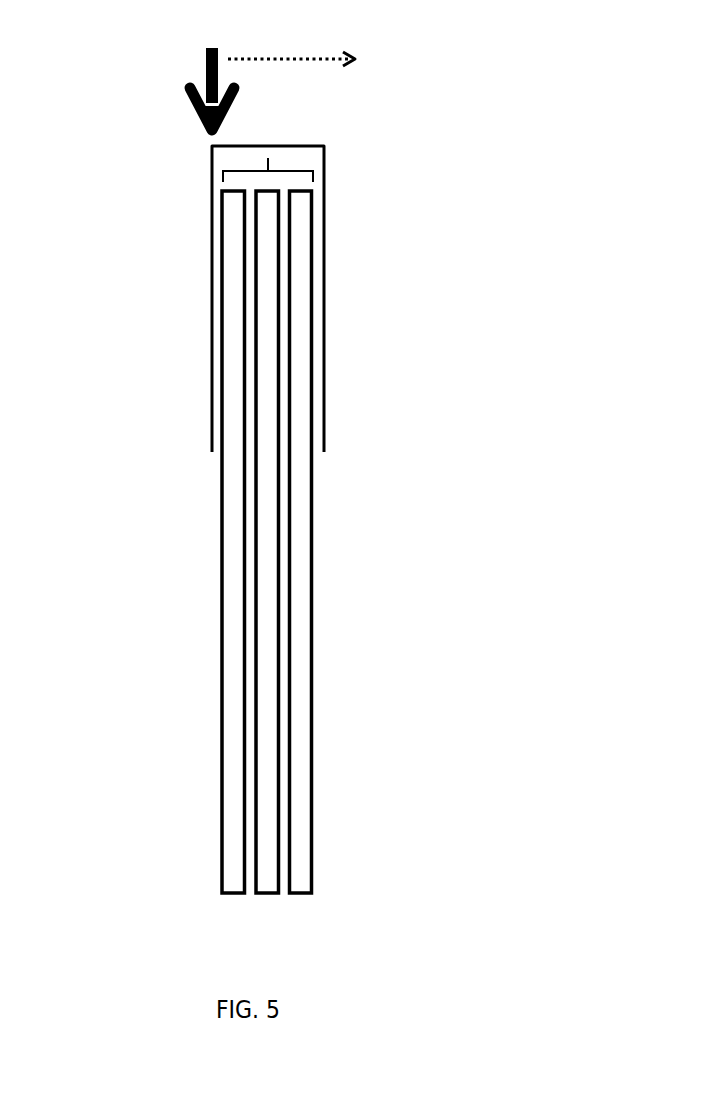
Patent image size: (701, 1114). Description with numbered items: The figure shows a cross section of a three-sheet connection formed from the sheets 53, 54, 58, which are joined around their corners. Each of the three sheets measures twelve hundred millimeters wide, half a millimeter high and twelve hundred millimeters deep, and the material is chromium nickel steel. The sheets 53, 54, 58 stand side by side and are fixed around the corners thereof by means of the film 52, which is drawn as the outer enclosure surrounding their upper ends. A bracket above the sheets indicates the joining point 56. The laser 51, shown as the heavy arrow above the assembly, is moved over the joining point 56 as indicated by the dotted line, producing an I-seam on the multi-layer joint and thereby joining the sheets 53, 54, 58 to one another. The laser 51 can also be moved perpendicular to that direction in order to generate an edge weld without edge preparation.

The laser 51 is at (272, 66).
The film 52 is at (207, 190).
The sheet 53 is at (220, 510).
The sheet 54 is at (252, 595).
The joining point 56 is at (285, 157).
The sheet 58 is at (287, 672).